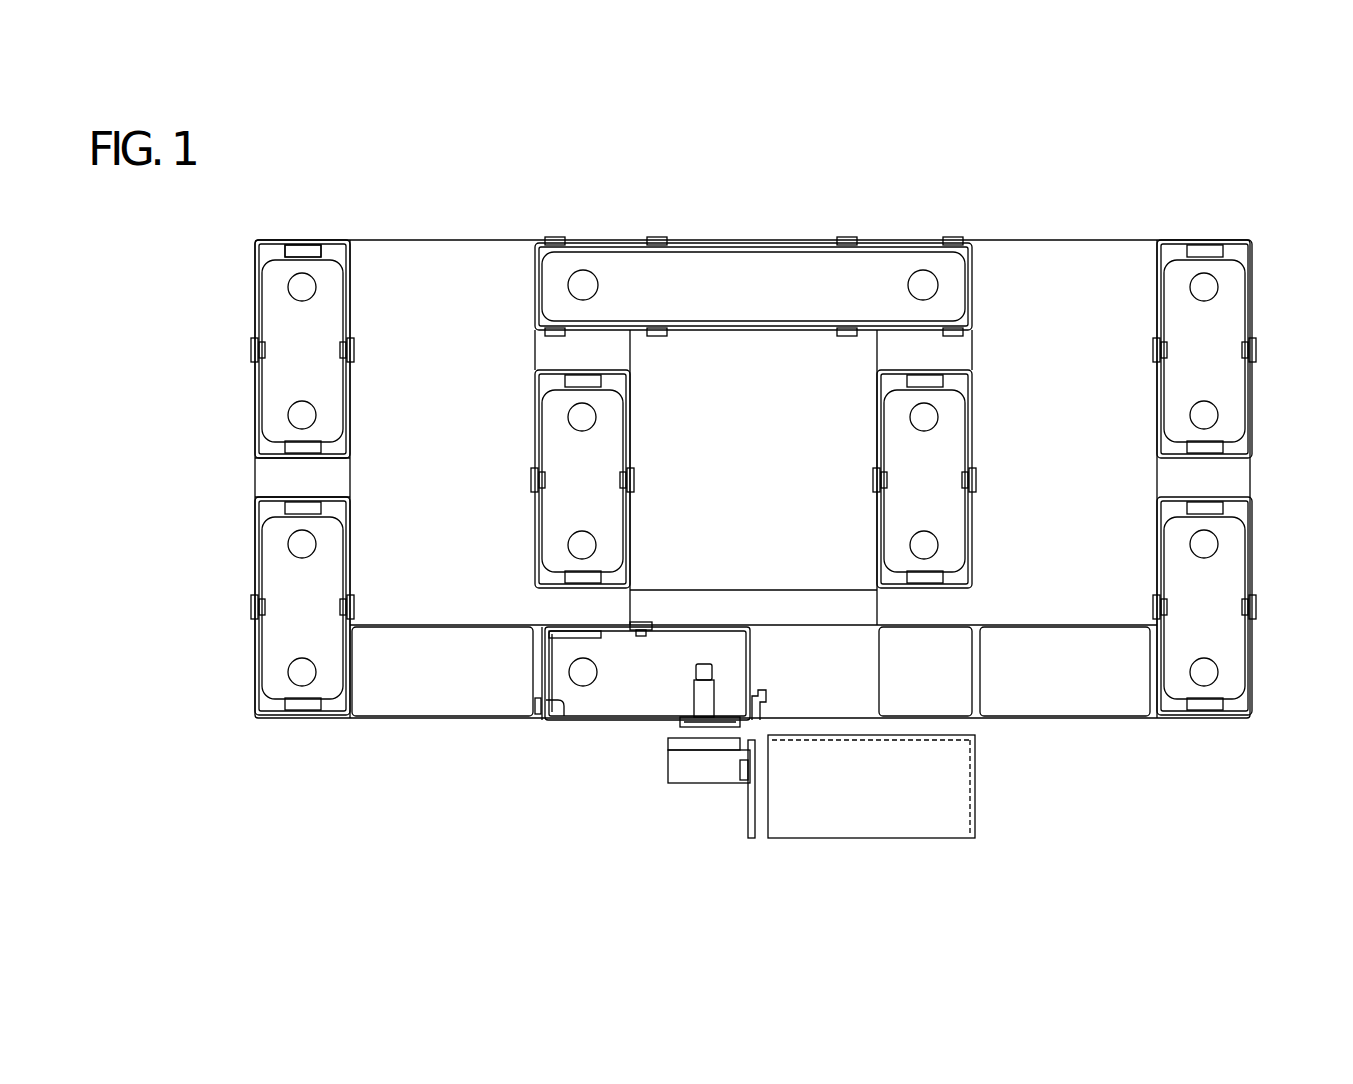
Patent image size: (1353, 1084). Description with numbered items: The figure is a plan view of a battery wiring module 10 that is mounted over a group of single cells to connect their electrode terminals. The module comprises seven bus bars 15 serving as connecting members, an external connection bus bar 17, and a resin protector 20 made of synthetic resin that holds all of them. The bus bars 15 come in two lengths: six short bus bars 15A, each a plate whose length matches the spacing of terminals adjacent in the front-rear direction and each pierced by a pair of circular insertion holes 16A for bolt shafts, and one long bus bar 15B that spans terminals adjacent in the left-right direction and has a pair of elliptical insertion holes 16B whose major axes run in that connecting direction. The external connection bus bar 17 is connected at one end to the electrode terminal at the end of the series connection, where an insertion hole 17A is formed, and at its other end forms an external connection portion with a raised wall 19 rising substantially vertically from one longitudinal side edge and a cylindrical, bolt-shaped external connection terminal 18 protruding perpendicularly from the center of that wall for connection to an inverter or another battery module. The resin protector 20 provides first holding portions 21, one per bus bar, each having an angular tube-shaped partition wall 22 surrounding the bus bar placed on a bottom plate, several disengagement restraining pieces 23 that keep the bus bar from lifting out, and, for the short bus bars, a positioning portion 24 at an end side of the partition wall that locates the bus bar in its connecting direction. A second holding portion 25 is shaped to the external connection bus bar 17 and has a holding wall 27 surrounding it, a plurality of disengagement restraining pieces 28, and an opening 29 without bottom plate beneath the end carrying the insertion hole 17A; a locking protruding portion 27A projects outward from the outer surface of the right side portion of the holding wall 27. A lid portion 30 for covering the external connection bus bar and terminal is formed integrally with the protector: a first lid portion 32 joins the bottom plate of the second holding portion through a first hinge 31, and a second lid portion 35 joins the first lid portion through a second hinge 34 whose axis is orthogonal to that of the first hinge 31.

The battery wiring module 10 is at (858, 195).
The resin protector 20 is at (1124, 243).
The bus bar 15 is at (796, 236).
The short bus bar 15A is at (341, 315).
The long bus bar 15B is at (796, 236).
The insertion hole 16A is at (1220, 305).
The insertion hole 16B is at (542, 248).
The external connection bus bar 17 is at (578, 715).
The insertion hole 17A is at (560, 680).
The external connection terminal 18 is at (660, 635).
The raised wall 19 is at (712, 705).
The first holding portion 21 is at (273, 466).
The partition wall 22 is at (302, 309).
The disengagement restraining piece 23 is at (275, 375).
The positioning portion 24 is at (287, 226).
The second holding portion 25 is at (700, 655).
The holding wall 27 is at (755, 650).
The locking protruding portion 27A is at (757, 778).
The disengagement restraining piece 28 is at (540, 700).
The opening 29 is at (548, 640).
The lid portion 30 is at (862, 825).
The first hinge 31 is at (668, 770).
The first lid portion 32 is at (706, 775).
The second hinge 34 is at (760, 825).
The second lid portion 35 is at (968, 778).